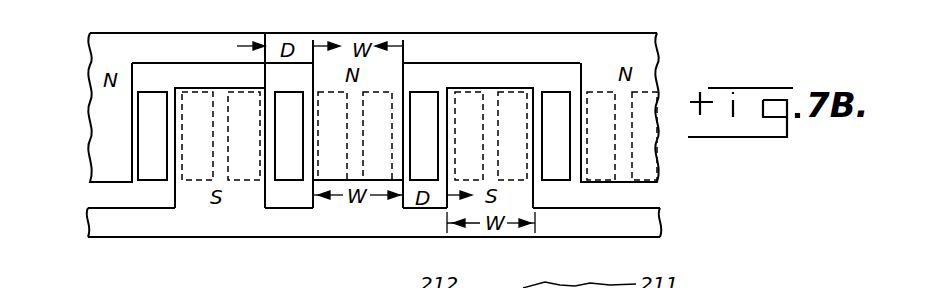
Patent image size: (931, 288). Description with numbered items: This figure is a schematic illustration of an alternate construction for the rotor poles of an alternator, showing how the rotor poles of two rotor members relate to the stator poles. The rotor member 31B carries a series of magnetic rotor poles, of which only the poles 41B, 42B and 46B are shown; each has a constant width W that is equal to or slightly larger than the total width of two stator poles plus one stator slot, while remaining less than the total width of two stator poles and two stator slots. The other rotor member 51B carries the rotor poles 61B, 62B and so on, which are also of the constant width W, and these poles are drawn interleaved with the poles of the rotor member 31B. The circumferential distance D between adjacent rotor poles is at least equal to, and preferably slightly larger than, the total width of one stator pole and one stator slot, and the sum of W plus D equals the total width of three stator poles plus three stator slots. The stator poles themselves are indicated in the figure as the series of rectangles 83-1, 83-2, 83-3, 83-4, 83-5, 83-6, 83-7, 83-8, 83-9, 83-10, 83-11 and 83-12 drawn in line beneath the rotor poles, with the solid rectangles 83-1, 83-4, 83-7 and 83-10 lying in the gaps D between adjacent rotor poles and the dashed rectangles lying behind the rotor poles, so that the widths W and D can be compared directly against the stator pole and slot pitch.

The rotor member 31B is at (498, 40).
The magnetic rotor pole 41B is at (395, 72).
The magnetic rotor pole 42B is at (653, 62).
The magnetic rotor pole 46B is at (100, 150).
The rotor member 51B is at (80, 229).
The rotor pole 61B is at (190, 198).
The rotor pole 62B is at (524, 188).
The magnet element 83-1 is at (148, 117).
The magnet element 83-2 is at (188, 97).
The magnet element 83-3 is at (240, 98).
The magnet element 83-4 is at (293, 172).
The magnet element 83-5 is at (325, 165).
The magnet element 83-6 is at (382, 88).
The magnet element 83-7 is at (420, 167).
The magnet element 83-8 is at (485, 84).
The magnet element 83-9 is at (513, 90).
The magnet element 83-10 is at (557, 170).
The magnet element 83-11 is at (607, 165).
The magnet element 83-12 is at (645, 155).